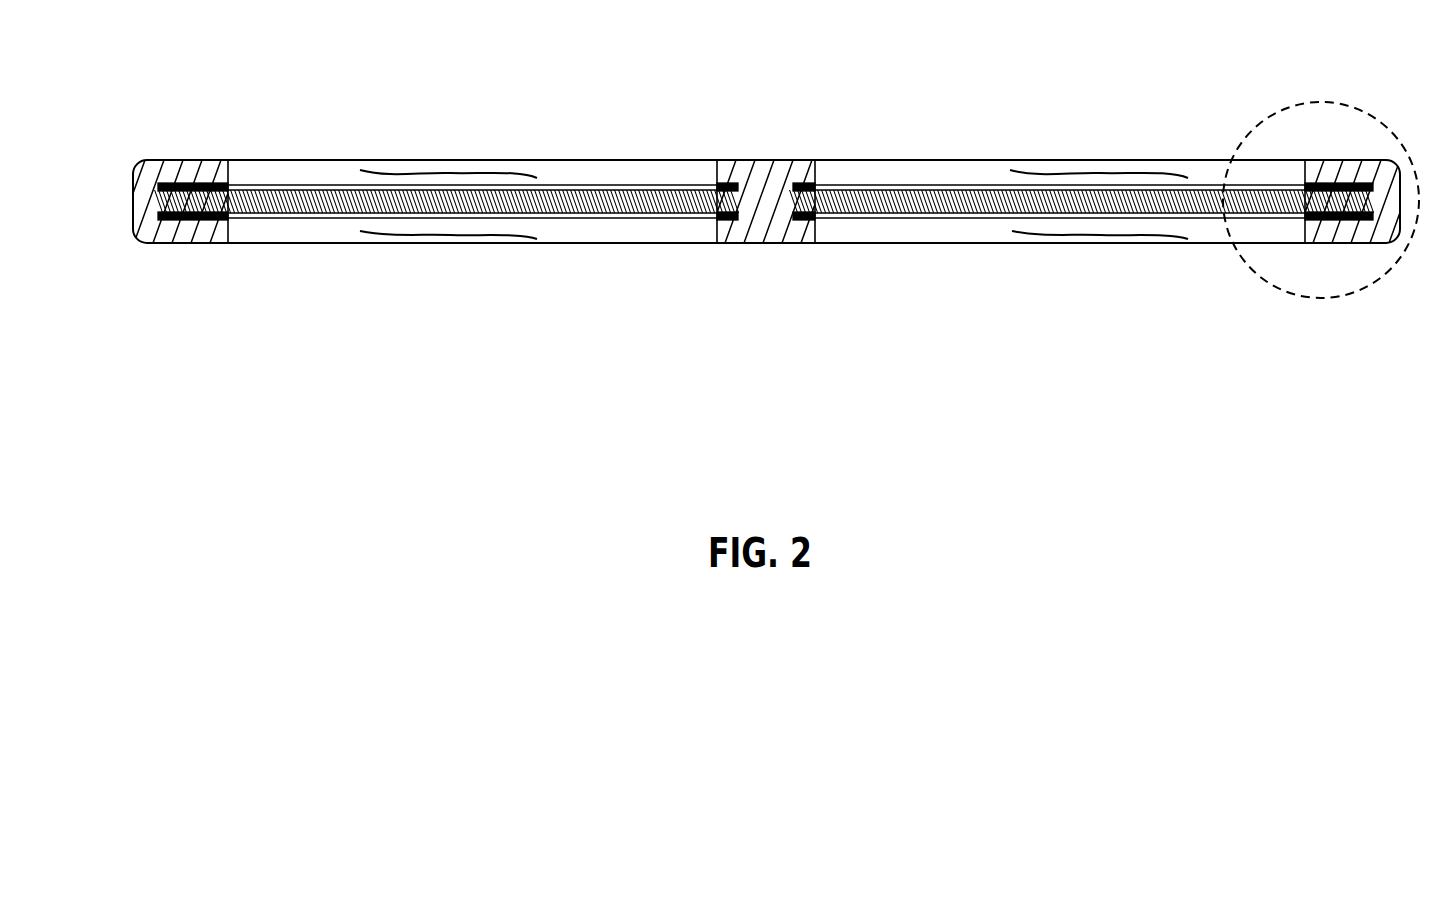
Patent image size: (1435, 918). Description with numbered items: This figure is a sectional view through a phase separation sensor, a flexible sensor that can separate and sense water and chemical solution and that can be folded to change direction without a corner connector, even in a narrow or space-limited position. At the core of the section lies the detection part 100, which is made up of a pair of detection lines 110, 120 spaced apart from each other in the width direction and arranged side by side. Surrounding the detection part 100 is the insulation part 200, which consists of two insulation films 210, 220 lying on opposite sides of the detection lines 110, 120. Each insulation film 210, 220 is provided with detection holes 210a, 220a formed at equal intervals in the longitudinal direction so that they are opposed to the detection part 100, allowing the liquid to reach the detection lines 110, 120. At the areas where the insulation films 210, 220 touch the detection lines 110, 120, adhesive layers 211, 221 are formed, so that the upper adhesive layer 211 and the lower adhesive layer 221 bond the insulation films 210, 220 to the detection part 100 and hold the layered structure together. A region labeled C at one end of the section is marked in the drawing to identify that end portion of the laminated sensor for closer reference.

The detection part 100 is at (765, 316).
The detection line 110 is at (898, 197).
The detection line 120 is at (567, 198).
The insulation part 200 is at (757, 270).
The insulation film 210 is at (182, 168).
The detection hole 210a is at (443, 172).
The adhesive layer 211 is at (212, 183).
The insulation film 220 is at (190, 230).
The detection hole 220a is at (450, 235).
The adhesive layer 221 is at (207, 220).
The detail region C is at (1286, 108).